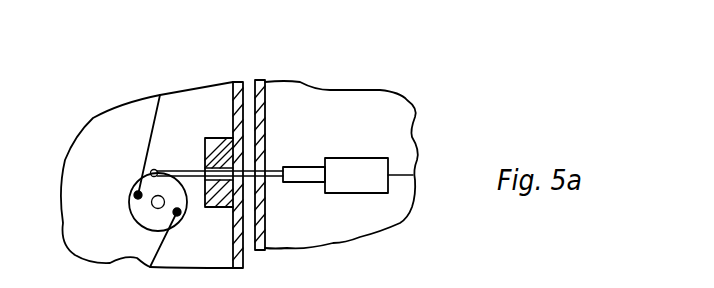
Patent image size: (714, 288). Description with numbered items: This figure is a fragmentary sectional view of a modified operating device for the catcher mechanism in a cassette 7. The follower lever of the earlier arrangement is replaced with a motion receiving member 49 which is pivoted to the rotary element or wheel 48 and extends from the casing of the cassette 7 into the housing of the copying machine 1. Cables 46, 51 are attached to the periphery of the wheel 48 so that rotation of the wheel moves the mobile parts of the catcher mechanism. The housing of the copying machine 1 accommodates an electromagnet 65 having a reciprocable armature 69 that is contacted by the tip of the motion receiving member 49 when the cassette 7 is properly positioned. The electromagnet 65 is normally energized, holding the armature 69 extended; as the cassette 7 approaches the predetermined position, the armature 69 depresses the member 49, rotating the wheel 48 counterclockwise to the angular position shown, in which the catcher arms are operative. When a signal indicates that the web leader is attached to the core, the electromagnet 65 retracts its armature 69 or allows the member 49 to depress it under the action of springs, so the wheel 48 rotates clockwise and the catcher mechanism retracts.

The cassette 7 is at (237, 82).
The copying machine 1 is at (267, 100).
The second flexible element (cable) 51 is at (148, 141).
The motion receiving member 49 is at (187, 166).
The rotary element or wheel 48 is at (145, 222).
The elongated flexible element (cable) 46 is at (165, 244).
The armature 69 is at (307, 167).
The electromagnet 65 is at (355, 170).